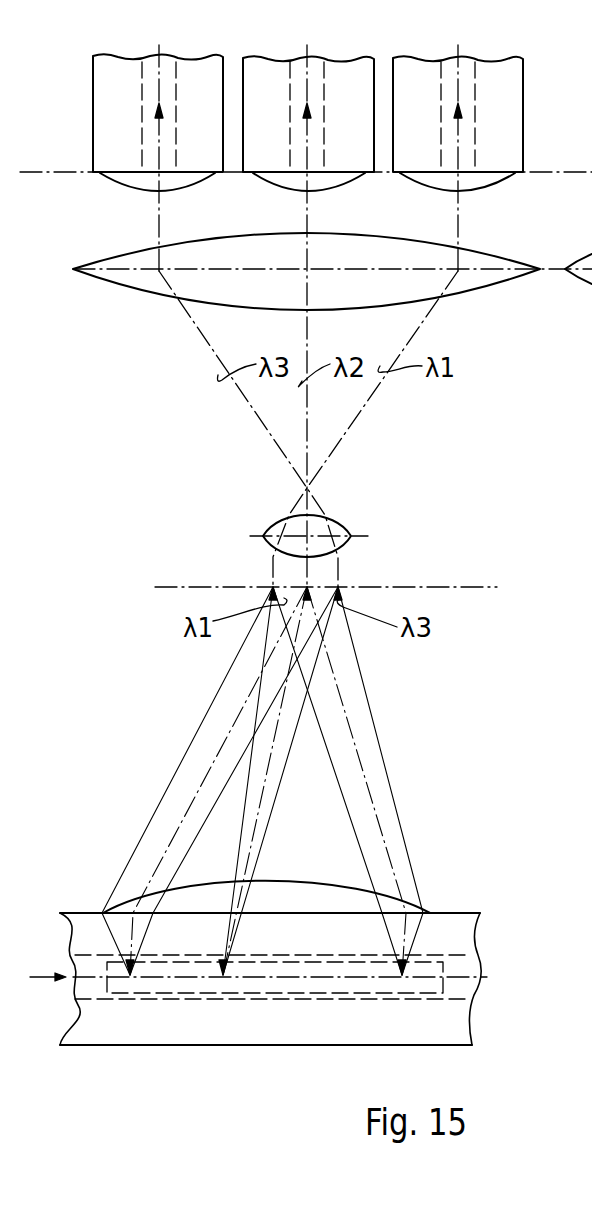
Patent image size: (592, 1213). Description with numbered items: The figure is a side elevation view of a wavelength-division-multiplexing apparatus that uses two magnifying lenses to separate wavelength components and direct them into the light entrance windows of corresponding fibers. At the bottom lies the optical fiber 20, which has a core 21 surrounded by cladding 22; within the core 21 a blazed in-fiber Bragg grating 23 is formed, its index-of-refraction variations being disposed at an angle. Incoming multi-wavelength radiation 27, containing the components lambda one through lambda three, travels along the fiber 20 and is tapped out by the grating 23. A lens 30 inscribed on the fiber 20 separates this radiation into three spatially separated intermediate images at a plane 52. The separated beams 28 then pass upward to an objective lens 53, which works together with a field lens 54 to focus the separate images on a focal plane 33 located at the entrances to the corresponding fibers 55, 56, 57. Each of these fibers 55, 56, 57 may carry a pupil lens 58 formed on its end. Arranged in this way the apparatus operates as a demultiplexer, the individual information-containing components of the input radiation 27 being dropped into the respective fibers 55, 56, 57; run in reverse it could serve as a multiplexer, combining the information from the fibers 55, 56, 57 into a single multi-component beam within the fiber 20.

The optical fiber 20 is at (253, 1045).
The core 21 is at (163, 70).
The cladding 22 is at (440, 1032).
The in-fiber Bragg grating 23 is at (153, 993).
The incoming multi-wavelength radiation 27 is at (45, 989).
The light beams 28 is at (284, 670).
The lens 30 is at (298, 903).
The focal plane 33 is at (48, 168).
The plane 52 is at (436, 590).
The objective lens 53 is at (338, 520).
The field lens 54 is at (473, 284).
The fiber 55 is at (105, 93).
The fiber 56 is at (267, 80).
The fiber 57 is at (505, 101).
The pupil lens 58 is at (137, 182).